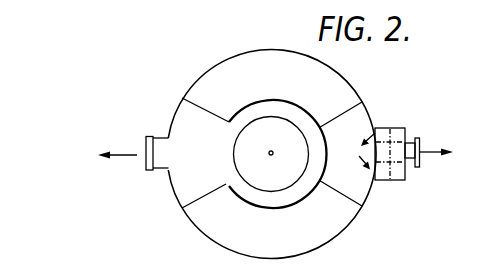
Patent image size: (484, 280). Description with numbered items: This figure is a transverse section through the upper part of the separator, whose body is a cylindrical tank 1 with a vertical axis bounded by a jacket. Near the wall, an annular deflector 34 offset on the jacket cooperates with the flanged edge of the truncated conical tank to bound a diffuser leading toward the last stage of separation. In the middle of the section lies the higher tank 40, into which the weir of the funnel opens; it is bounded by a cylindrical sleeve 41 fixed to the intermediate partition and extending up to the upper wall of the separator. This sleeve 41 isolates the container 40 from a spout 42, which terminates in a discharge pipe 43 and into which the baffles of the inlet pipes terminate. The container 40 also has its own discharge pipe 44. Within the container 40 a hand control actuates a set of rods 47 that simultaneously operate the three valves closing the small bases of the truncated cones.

The cylindrical tank 1 is at (182, 92).
The annular deflector 34 is at (238, 172).
The higher tank 40 is at (231, 125).
The cylindrical sleeve 41 is at (274, 99).
The spout 42 is at (357, 144).
The discharge pipe 43 is at (421, 146).
The discharge pipe 44 is at (162, 137).
The set of rods 47 is at (270, 156).